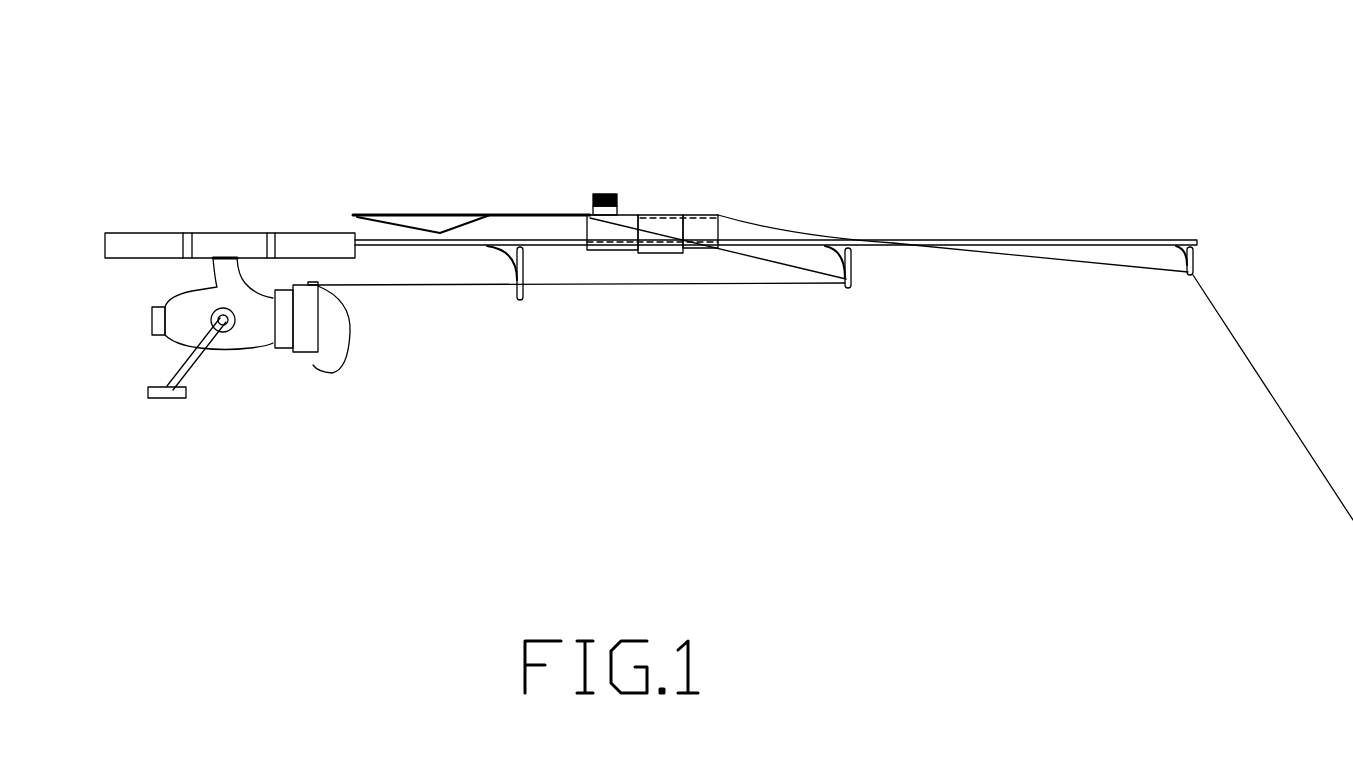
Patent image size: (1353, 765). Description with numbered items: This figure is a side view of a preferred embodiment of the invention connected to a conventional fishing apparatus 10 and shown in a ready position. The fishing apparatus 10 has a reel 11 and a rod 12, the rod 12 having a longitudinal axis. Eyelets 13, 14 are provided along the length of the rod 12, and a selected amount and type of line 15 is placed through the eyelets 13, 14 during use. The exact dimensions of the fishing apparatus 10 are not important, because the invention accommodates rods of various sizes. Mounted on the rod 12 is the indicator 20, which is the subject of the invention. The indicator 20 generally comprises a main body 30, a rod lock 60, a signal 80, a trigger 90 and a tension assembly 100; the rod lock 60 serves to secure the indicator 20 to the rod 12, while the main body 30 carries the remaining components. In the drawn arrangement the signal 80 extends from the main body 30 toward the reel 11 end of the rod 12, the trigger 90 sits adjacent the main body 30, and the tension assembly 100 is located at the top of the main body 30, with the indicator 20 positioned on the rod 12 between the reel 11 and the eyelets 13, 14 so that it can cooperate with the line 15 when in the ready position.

The fishing apparatus 10 is at (267, 233).
The reel 11 is at (245, 347).
The rod 12 is at (1055, 240).
The eyelet 13 is at (520, 300).
The eyelet 14 is at (852, 283).
The line 15 is at (737, 283).
The indicator 20 is at (675, 213).
The main body 30 is at (718, 213).
The rod lock 60 is at (662, 253).
The signal 80 is at (523, 215).
The trigger 90 is at (590, 215).
The tension assembly 100 is at (620, 197).